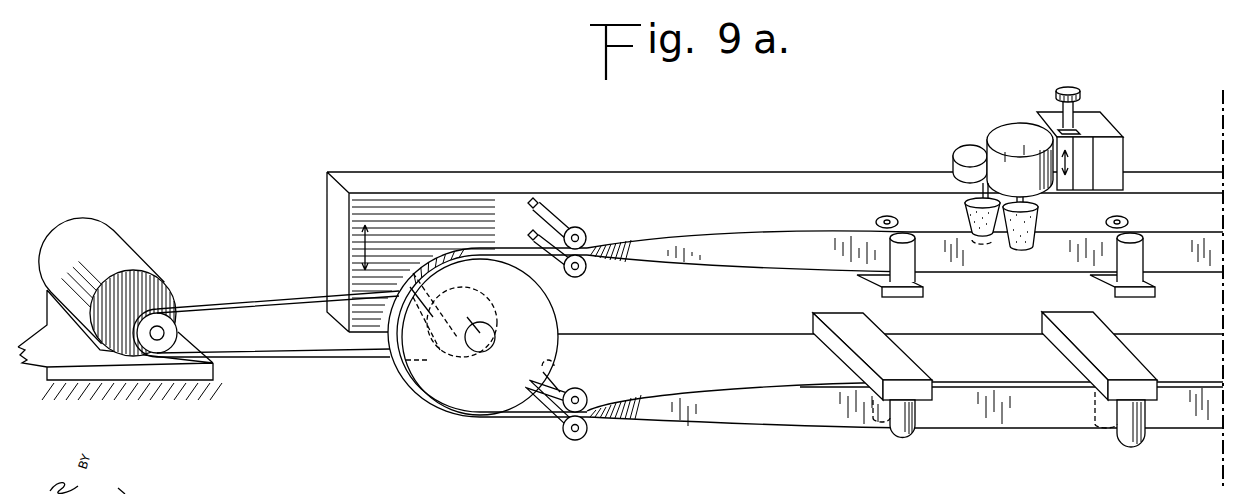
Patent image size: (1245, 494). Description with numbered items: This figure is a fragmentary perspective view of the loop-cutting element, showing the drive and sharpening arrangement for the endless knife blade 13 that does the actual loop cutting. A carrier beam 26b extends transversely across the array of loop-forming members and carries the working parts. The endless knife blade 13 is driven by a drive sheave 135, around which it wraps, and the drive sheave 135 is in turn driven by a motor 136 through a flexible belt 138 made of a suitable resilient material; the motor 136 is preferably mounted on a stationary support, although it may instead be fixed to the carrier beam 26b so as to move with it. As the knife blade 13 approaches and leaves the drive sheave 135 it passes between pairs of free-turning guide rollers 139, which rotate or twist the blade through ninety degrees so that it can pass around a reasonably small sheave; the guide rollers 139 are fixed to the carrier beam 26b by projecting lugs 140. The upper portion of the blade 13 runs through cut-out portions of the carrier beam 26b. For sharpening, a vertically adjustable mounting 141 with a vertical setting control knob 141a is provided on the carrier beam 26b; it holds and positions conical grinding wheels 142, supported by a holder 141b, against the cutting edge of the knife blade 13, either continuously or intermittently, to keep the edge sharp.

The conveyor belt 13 is at (550, 347).
The carrier beam 26b is at (442, 177).
The drive sheave 135 is at (537, 307).
The motor 136 is at (117, 249).
The flexible belt 138 is at (255, 297).
The guide rollers 139 is at (560, 220).
The projecting lugs 140 is at (905, 298).
The vertically adjustable mounting 141 is at (1100, 123).
The vertical setting control knob 141a is at (1080, 90).
The holder 141b is at (1007, 127).
The conical grinding wheels 142 is at (963, 208).